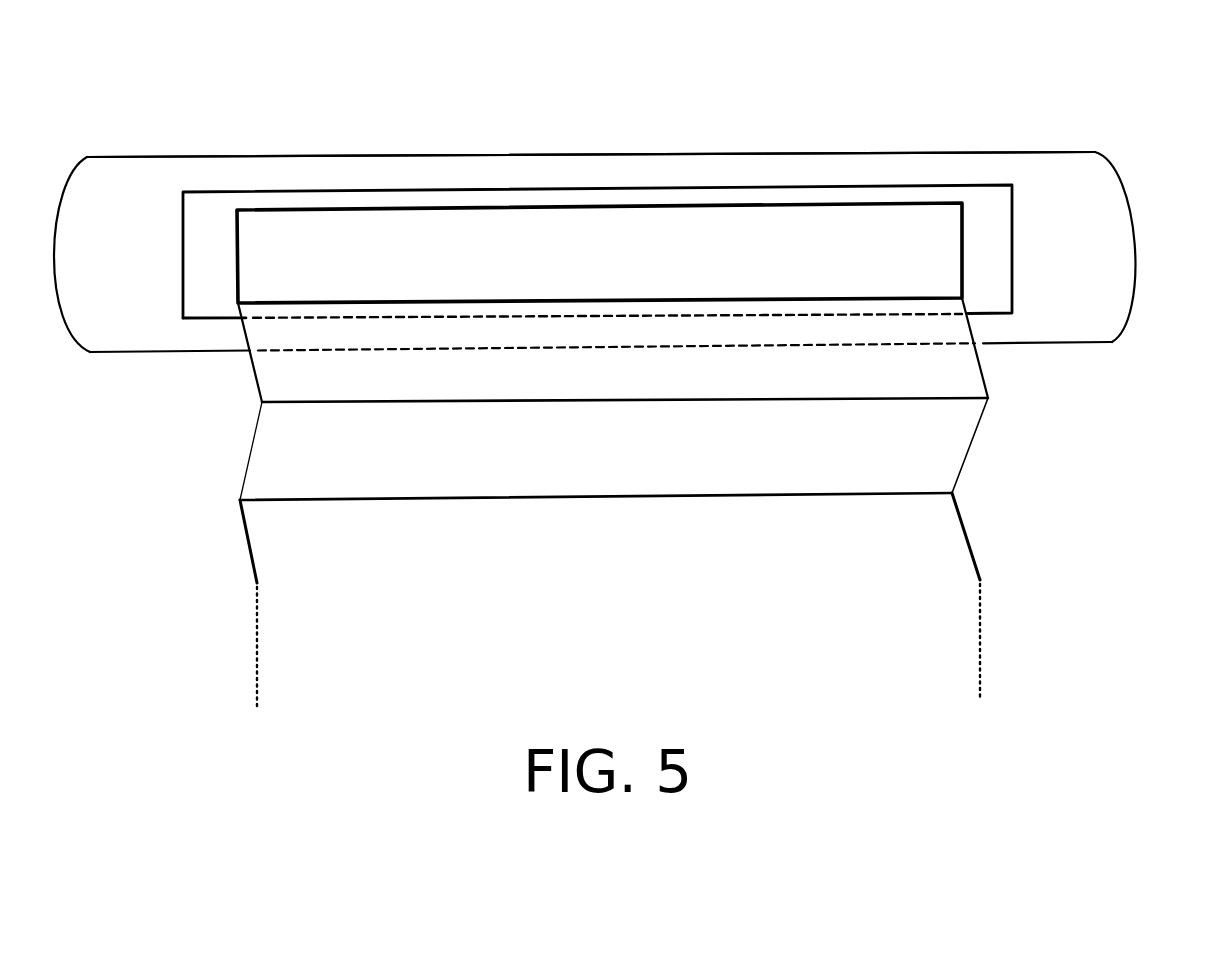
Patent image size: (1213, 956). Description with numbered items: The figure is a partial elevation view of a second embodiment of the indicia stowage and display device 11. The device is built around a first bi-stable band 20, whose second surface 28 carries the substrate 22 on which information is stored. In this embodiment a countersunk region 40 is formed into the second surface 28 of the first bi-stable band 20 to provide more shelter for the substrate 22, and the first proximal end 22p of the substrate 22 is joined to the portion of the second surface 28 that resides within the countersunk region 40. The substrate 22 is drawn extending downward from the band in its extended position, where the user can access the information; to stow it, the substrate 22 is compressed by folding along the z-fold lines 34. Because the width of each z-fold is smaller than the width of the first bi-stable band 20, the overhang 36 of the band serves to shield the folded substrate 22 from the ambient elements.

The device 11 is at (1042, 114).
The first bi-stable band 20 is at (237, 157).
The substrate 22 is at (898, 433).
The first proximal end 22p is at (780, 225).
The second surface 28 is at (1063, 258).
The z-fold lines 34 is at (262, 402).
The overhang 36 is at (503, 168).
The countersunk region 40 is at (283, 193).